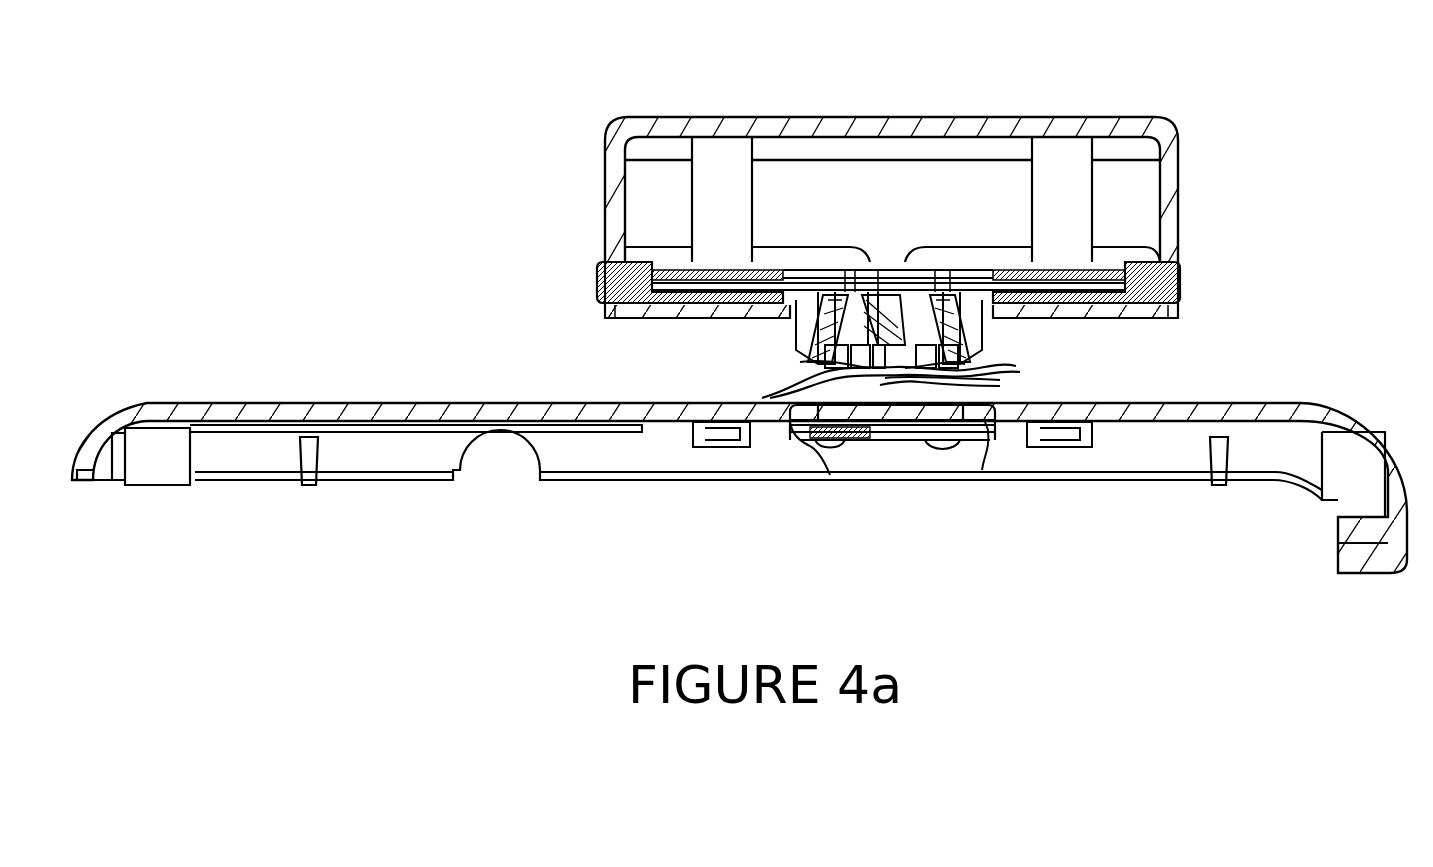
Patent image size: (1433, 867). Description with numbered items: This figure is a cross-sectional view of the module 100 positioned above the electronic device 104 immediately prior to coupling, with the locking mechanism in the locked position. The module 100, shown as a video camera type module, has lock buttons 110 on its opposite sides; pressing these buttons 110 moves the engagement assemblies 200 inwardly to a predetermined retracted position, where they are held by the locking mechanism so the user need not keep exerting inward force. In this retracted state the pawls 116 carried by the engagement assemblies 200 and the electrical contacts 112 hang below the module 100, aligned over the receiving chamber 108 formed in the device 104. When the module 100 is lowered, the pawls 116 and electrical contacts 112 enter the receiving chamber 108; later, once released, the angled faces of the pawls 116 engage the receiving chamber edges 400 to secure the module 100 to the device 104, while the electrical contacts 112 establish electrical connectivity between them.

The module 100 is at (1167, 130).
The engagement assemblies 200 is at (752, 248).
The lock button 110 is at (597, 291).
The pawls 116 is at (806, 358).
The electrical contacts 112 is at (806, 392).
The receiving chamber 108 is at (1000, 386).
The electronic device 104 is at (1340, 409).
The receiving chamber edges 400 is at (830, 475).